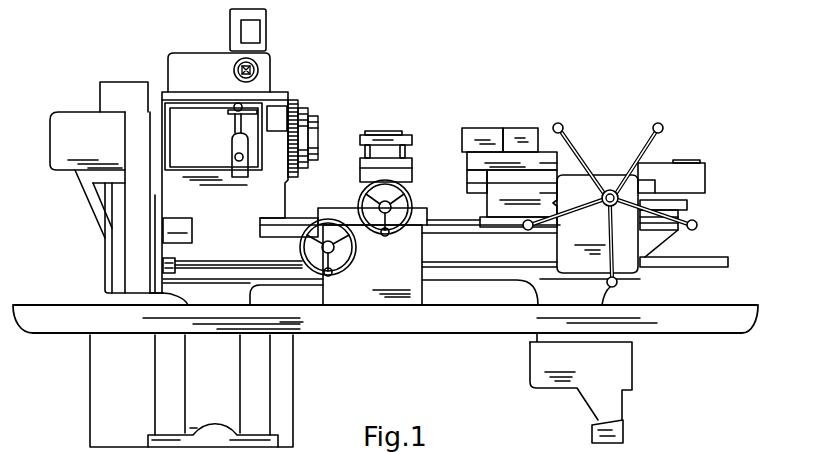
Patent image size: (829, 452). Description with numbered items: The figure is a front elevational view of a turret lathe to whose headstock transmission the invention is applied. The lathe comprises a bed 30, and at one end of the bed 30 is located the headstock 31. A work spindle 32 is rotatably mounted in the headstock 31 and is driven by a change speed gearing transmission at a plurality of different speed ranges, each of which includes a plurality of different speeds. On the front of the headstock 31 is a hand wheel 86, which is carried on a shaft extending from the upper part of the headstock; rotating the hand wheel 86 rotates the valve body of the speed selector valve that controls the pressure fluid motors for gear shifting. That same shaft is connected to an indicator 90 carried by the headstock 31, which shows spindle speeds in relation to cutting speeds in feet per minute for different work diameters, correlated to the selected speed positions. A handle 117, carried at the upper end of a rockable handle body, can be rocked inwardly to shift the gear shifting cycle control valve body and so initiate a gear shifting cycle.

The bed 30 is at (502, 247).
The headstock 31 is at (245, 191).
The work spindle 32 is at (316, 146).
The hand wheel 86 is at (258, 70).
The indicator 90 is at (252, 33).
The handle 117 is at (235, 127).